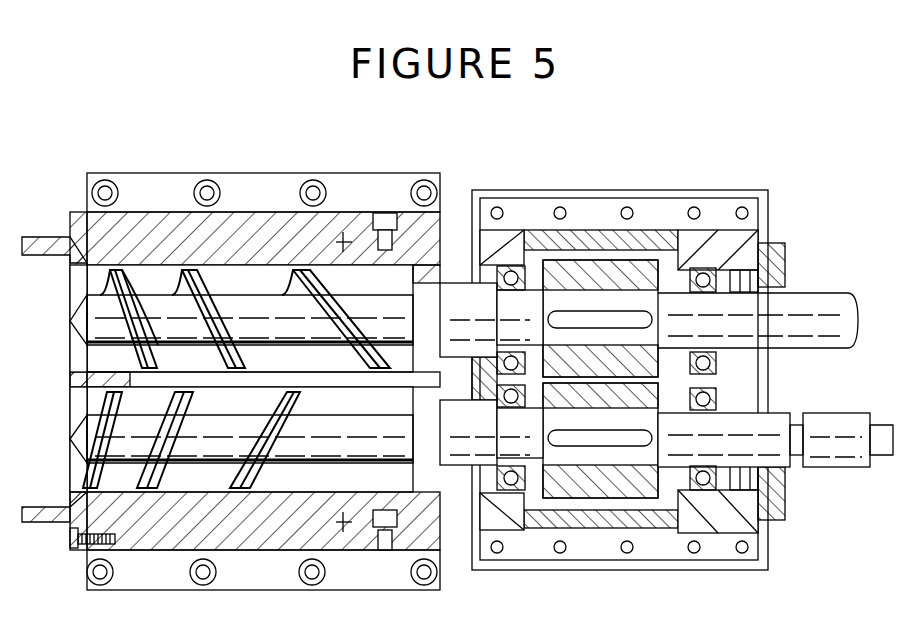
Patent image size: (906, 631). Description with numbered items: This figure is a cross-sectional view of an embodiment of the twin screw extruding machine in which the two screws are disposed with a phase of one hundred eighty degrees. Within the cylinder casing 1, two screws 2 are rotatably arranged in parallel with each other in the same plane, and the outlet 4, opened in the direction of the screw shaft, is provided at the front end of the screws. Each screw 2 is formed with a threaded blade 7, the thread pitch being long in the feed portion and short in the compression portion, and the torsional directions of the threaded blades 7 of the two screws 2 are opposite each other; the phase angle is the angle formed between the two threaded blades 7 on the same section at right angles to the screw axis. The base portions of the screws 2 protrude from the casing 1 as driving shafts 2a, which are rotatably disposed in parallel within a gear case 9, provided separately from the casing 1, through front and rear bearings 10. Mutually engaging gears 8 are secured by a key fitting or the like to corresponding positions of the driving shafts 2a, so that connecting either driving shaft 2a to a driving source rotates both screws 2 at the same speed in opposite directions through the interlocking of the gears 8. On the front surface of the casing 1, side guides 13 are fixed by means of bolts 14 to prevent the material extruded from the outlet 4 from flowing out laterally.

The cylinder casing 1 is at (270, 210).
The screw 2 is at (248, 300).
The driving shaft 2a is at (815, 305).
The outlet 4 is at (78, 286).
The threaded blade 7 is at (232, 470).
The gear 8 is at (598, 260).
The gear case 9 is at (745, 198).
The bearing 10 is at (527, 268).
The side guide 13 is at (50, 240).
The bolt 14 is at (74, 545).